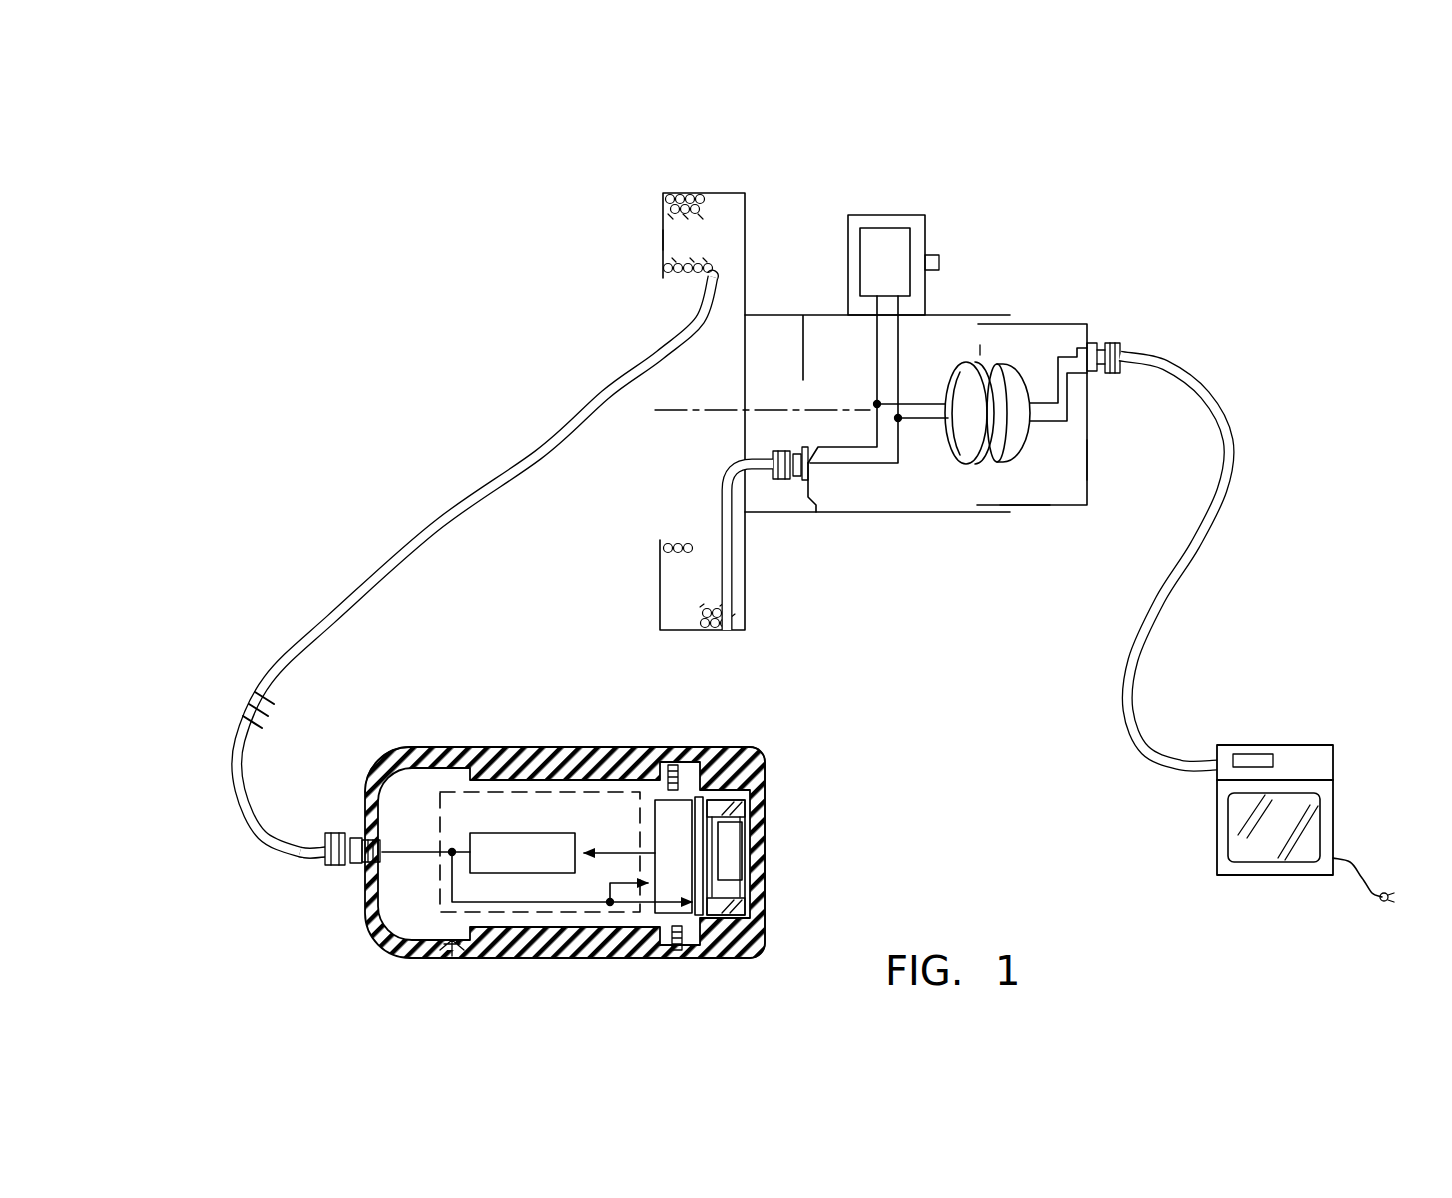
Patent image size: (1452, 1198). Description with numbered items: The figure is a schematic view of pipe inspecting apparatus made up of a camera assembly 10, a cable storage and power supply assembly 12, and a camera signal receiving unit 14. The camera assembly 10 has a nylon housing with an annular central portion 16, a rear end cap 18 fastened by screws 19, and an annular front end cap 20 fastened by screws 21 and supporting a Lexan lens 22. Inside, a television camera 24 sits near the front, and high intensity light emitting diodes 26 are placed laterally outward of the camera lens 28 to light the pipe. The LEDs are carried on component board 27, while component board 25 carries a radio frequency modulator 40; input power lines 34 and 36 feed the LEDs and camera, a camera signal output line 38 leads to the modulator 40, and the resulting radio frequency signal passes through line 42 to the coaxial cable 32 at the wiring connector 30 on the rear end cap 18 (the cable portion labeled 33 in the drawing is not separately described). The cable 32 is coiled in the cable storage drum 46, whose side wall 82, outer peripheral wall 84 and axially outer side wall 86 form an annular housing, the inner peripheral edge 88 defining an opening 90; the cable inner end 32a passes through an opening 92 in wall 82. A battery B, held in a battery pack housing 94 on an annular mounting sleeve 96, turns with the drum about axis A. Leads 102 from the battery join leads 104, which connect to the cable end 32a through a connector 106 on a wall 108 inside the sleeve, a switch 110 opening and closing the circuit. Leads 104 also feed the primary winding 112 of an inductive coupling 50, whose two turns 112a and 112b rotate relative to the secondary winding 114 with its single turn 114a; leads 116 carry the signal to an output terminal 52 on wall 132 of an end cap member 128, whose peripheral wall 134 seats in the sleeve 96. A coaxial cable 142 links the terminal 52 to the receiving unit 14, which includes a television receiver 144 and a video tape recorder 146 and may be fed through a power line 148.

The camera assembly 10 is at (473, 690).
The cable storage and power supply assembly 12 is at (858, 555).
The camera signal receiving unit 14 is at (1303, 712).
The annular central portion 16 is at (560, 745).
The rear end cap 18 is at (397, 748).
The screws 19 is at (450, 955).
The annular front end cap 20 is at (762, 745).
The screws 21 is at (680, 958).
The Lexan lens 22 is at (750, 830).
The television camera 24 is at (657, 800).
The component board 25 is at (512, 913).
The high intensity light emitting diodes 26 is at (724, 812).
The component board 27 is at (703, 797).
The camera lens 28 is at (738, 850).
The wiring connector 30 is at (350, 868).
The coaxial cable 32 is at (245, 725).
The inner end of coaxial cable 32a is at (763, 468).
The fiber cable 33 is at (278, 670).
The input power line 34 is at (643, 905).
The input power line 36 is at (625, 883).
The camera signal output line 38 is at (602, 848).
The radio frequency modulator 40 is at (497, 832).
The line 42 is at (413, 850).
The cable storage drum 46 is at (750, 198).
The inductive coupling assembly 50 is at (1000, 345).
The output terminal 52 is at (1100, 345).
The drum side wall 82 is at (750, 247).
The outer peripheral wall 84 is at (707, 193).
The axially outer side wall 86 is at (663, 243).
The radially inner peripheral edge 88 is at (662, 283).
The opening 90 is at (668, 486).
The opening 92 is at (745, 451).
The battery pack housing 94 is at (927, 225).
The annular mounting sleeve 96 is at (885, 520).
The leads 102 is at (877, 350).
The leads 104 is at (848, 450).
The connector 106 is at (797, 455).
The wall 108 is at (812, 512).
The switch 110 is at (940, 262).
The primary winding 112 is at (967, 466).
The turn of primary winding 112a is at (952, 375).
The turn of primary winding 112b is at (952, 440).
The secondary winding 114 is at (1022, 466).
The turn of secondary winding 114a is at (1027, 372).
The leads 116 is at (1060, 412).
The end cap member 128 is at (1092, 497).
The wall 132 is at (1090, 457).
The radially outer peripheral wall 134 is at (1027, 508).
The coaxial cable 142 is at (1140, 655).
The television receiver 144 is at (1335, 818).
The video tape recorder 146 is at (1335, 760).
The power line 148 is at (1370, 885).
The axis A is at (680, 403).
The battery B is at (893, 245).